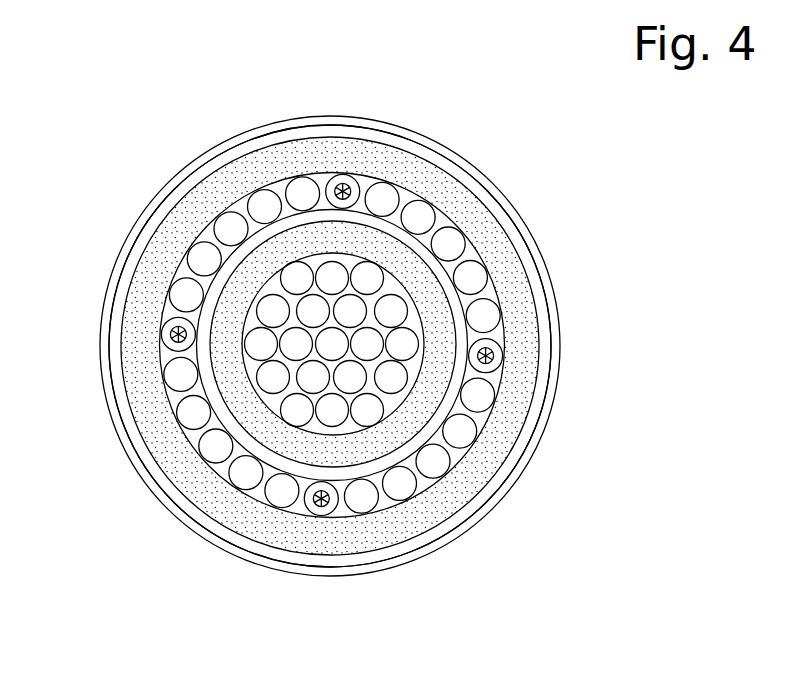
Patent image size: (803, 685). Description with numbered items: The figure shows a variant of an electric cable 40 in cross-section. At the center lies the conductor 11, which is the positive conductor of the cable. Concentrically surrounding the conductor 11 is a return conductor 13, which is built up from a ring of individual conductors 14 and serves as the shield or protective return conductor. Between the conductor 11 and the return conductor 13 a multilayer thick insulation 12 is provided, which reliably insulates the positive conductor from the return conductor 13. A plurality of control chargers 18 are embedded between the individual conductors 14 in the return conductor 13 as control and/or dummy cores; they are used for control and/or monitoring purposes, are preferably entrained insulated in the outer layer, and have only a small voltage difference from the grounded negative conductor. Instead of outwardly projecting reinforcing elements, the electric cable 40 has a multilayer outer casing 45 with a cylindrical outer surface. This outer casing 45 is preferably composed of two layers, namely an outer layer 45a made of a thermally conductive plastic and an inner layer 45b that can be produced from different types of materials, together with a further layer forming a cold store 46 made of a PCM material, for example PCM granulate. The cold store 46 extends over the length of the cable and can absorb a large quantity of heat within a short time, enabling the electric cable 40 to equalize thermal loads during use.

The electric cable 40 is at (143, 140).
The outer casing 45 is at (142, 511).
The outer layer 45a is at (262, 132).
The inner layer 45b is at (342, 133).
The cold store 46 is at (280, 525).
The return conductor 13 is at (472, 255).
The individual conductors 14 is at (460, 432).
The control chargers 18 is at (173, 330).
The insulation 12 is at (423, 302).
The conductor 11 is at (359, 437).